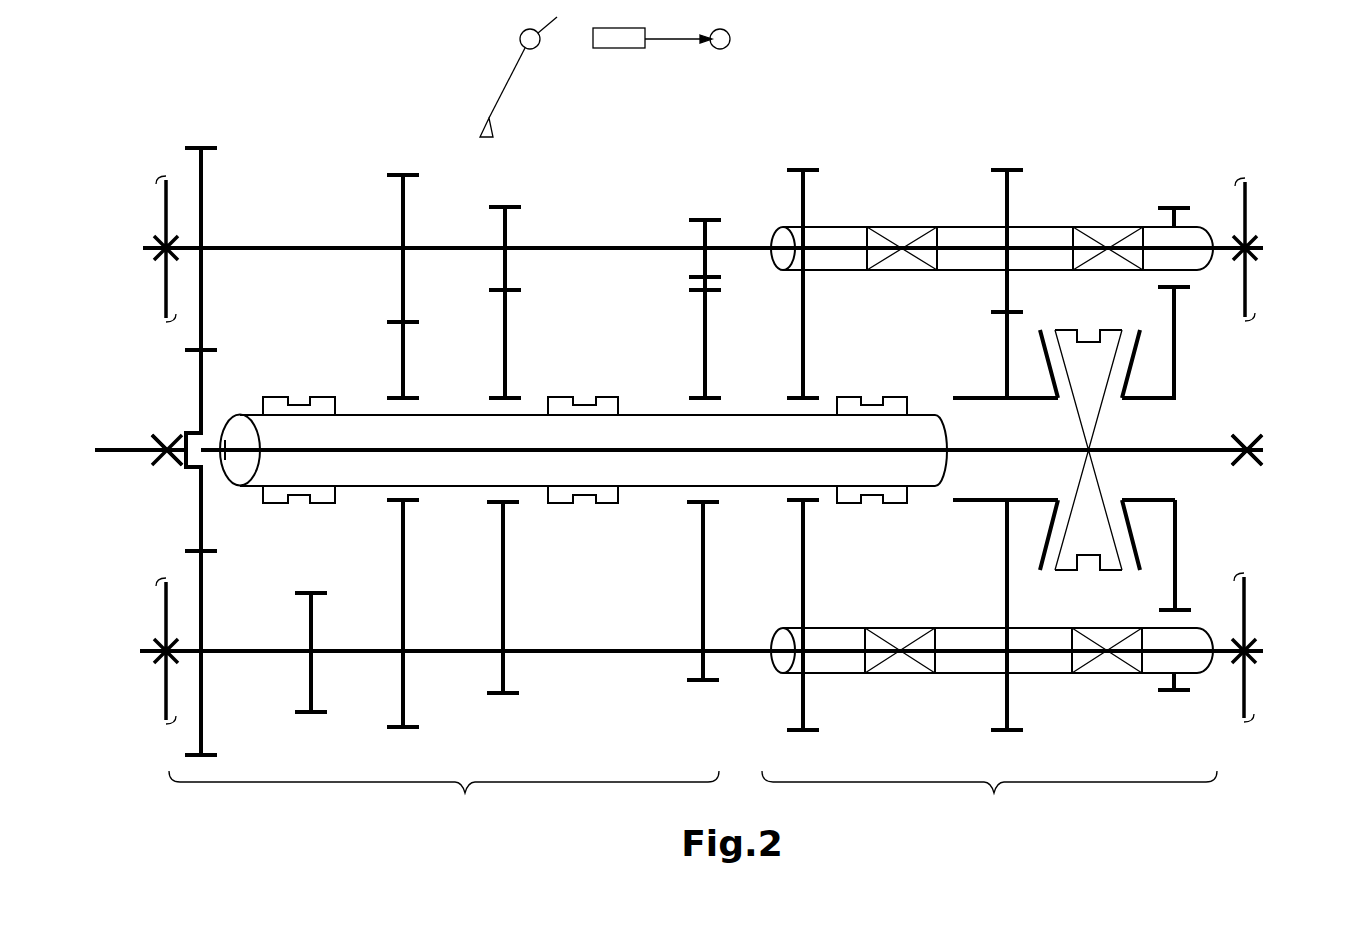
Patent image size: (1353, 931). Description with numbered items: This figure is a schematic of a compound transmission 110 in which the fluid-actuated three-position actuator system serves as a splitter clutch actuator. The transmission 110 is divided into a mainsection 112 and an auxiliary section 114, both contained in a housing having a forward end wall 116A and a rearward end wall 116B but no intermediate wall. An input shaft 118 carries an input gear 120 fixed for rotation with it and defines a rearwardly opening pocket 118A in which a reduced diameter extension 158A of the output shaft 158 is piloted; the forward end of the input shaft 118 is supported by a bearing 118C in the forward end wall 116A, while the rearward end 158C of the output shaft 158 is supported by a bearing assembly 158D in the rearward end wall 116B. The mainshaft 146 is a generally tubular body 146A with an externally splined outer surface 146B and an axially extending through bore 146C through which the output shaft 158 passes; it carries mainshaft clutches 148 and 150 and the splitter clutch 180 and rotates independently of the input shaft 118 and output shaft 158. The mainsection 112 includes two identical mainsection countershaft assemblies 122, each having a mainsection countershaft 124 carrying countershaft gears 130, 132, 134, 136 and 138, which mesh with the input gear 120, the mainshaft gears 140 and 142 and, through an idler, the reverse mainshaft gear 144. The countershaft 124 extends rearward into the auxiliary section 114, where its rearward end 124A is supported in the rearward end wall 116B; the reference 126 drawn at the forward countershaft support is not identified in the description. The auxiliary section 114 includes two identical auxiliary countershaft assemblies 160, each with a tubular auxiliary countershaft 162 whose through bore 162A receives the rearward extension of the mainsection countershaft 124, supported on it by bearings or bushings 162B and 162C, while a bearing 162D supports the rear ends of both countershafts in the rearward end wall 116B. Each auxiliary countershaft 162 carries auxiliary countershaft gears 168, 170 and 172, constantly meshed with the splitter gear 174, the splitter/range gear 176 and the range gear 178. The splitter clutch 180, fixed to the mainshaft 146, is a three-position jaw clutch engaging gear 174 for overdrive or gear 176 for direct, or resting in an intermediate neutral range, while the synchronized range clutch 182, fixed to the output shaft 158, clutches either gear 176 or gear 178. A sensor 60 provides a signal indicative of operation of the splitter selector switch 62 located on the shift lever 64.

The sensor 60 is at (620, 50).
The splitter selector switch 62 is at (545, 40).
The shift lever 64 is at (507, 84).
The compound transmission 110 is at (940, 150).
The mainsection 112 is at (444, 799).
The auxiliary section 114 is at (989, 799).
The forward end wall 116A is at (167, 306).
The rearward end wall 116B is at (1248, 214).
The input shaft 118 is at (138, 460).
The rearwardly opening pocket 118A is at (200, 465).
The bearing 118C is at (178, 480).
The input gear 120 is at (198, 392).
The mainsection countershaft assembly 122 is at (590, 210).
The mainsection countershaft 124 is at (450, 658).
The rearward end 124A is at (1225, 658).
The bearing 126 is at (160, 652).
The countershaft gear 130 is at (203, 204).
The countershaft gear 132 is at (313, 634).
The countershaft gear 134 is at (402, 236).
The countershaft gear 136 is at (503, 240).
The countershaft gear 138 is at (703, 233).
The mainshaft gear 140 is at (404, 350).
The mainshaft gear 142 is at (506, 384).
The reverse mainshaft gear 144 is at (707, 385).
The mainshaft 146 is at (430, 410).
The tubular body 146A is at (362, 496).
The externally splined outer surface 146B is at (440, 414).
The through bore 146C is at (640, 418).
The mainshaft clutch 148 is at (300, 392).
The mainshaft clutch 150 is at (588, 404).
The output shaft 158 is at (1213, 445).
The reduced diameter extension 158A is at (245, 418).
The rearward end 158C is at (1260, 455).
The bearing assembly 158D is at (1260, 445).
The auxiliary countershaft assembly 160 is at (1088, 183).
The auxiliary countershaft 162 is at (968, 228).
The through bore 162A is at (962, 636).
The bearing or bushing 162B is at (900, 236).
The bearing or bushing 162C is at (1105, 228).
The bearing 162D is at (1252, 648).
The auxiliary countershaft gear 168 is at (806, 213).
The auxiliary countershaft gear 170 is at (1009, 207).
The auxiliary countershaft gear 172 is at (1185, 224).
The splitter gear 174 is at (806, 382).
The splitter/range gear 176 is at (1005, 383).
The range gear 178 is at (1172, 292).
The splitter clutch 180 is at (870, 404).
The synchronized range clutch 182 is at (1092, 488).